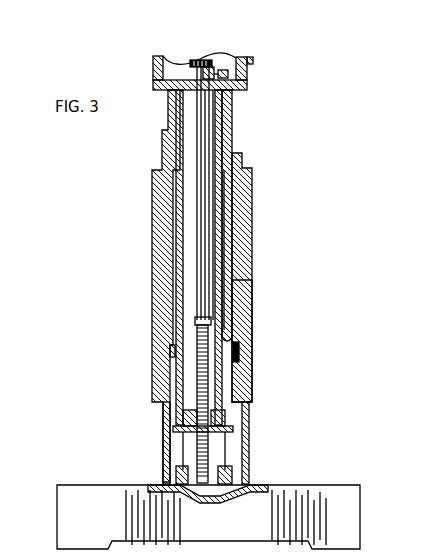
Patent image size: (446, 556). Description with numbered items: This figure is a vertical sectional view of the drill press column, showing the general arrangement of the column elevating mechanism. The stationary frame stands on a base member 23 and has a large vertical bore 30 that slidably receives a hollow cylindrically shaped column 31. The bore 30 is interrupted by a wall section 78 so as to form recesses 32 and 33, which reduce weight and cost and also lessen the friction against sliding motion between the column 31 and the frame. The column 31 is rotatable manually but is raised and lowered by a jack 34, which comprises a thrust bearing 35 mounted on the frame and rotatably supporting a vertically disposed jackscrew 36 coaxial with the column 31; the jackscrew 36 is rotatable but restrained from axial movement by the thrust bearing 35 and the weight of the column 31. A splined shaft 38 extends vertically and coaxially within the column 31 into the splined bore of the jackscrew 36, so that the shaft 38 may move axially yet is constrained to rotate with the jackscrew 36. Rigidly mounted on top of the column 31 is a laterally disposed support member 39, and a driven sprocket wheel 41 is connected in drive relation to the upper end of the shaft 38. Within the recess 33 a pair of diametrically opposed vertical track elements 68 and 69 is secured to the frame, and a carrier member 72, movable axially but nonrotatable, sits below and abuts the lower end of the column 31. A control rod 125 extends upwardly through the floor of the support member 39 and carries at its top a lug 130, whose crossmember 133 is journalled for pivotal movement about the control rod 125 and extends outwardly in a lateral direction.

The base member 23 is at (108, 528).
The vertical bore 30 is at (242, 157).
The column 31 is at (236, 178).
The recess 32 is at (243, 207).
The recess 33 is at (170, 352).
The jack 34 is at (223, 450).
The thrust bearing 35 is at (222, 485).
The jackscrew 36 is at (209, 340).
The splined shaft 38 is at (205, 238).
The support member 39 is at (163, 92).
The driven sprocket wheel 41 is at (207, 61).
The track element 68 is at (163, 458).
The track element 69 is at (250, 458).
The carrier member 72 is at (196, 438).
The wall section 78 is at (240, 326).
The control rod 125 is at (214, 72).
The lug 130 is at (241, 61).
The crossmember 133 is at (188, 67).